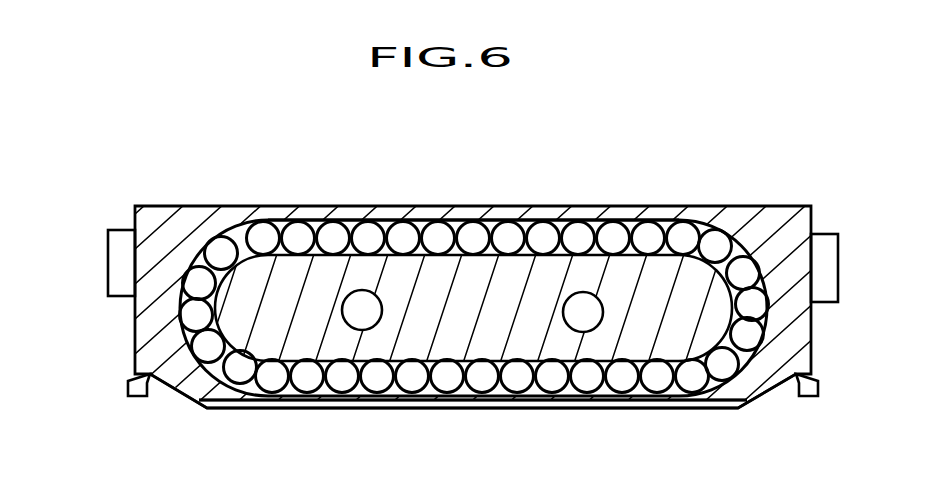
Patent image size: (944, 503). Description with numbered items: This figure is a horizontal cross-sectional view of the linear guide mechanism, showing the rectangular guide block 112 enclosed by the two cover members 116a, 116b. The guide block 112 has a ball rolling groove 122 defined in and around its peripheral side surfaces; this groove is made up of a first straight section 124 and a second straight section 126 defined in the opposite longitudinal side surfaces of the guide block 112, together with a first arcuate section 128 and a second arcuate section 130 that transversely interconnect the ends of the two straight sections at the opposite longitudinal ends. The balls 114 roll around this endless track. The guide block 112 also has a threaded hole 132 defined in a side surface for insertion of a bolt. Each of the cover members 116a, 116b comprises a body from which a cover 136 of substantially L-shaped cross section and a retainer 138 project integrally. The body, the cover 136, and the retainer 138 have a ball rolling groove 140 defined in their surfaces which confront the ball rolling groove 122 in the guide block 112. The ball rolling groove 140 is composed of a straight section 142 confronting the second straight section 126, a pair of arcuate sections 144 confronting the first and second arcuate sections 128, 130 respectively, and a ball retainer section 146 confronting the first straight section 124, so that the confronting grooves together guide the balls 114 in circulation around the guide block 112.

The guide block 112 is at (552, 270).
The ball 114 is at (437, 236).
The cover member 116a is at (160, 214).
The cover member 116b is at (780, 214).
The ball rolling groove 122 is at (376, 362).
The first straight section 124 is at (456, 362).
The second straight section 126 is at (514, 222).
The first arcuate section 128 is at (185, 283).
The second arcuate section 130 is at (765, 262).
The threaded hole 132 is at (182, 388).
The cover 136 is at (380, 221).
The retainer 138 is at (328, 405).
The ball rolling groove 140 is at (257, 218).
The straight section 142 is at (306, 222).
The arcuate section 144 is at (355, 312).
The ball retainer section 146 is at (266, 383).